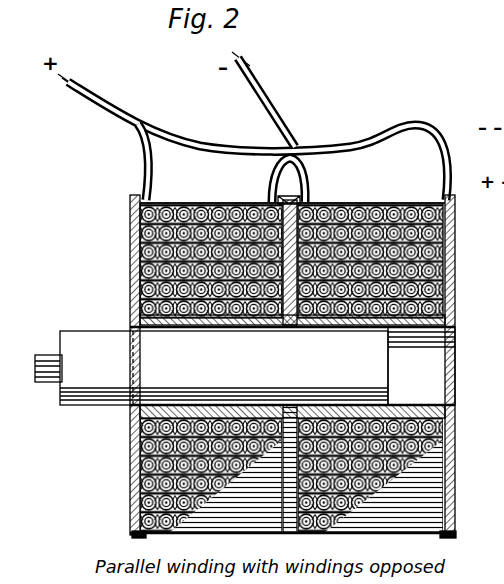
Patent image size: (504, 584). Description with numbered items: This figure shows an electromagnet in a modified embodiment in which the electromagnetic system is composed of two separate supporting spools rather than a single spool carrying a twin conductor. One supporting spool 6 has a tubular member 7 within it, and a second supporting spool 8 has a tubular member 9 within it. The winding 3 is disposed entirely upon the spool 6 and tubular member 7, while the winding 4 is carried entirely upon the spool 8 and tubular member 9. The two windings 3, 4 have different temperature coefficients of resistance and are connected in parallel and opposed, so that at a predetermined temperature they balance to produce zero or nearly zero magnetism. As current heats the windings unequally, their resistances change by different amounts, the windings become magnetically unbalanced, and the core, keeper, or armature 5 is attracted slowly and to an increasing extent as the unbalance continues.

The winding 3 is at (265, 178).
The winding 4 is at (307, 177).
The core, keeper, or armature 5 is at (160, 380).
The supporting spool 6 is at (130, 248).
The tubular member 7 is at (163, 330).
The supporting spool 8 is at (457, 277).
The tubular member 9 is at (433, 407).